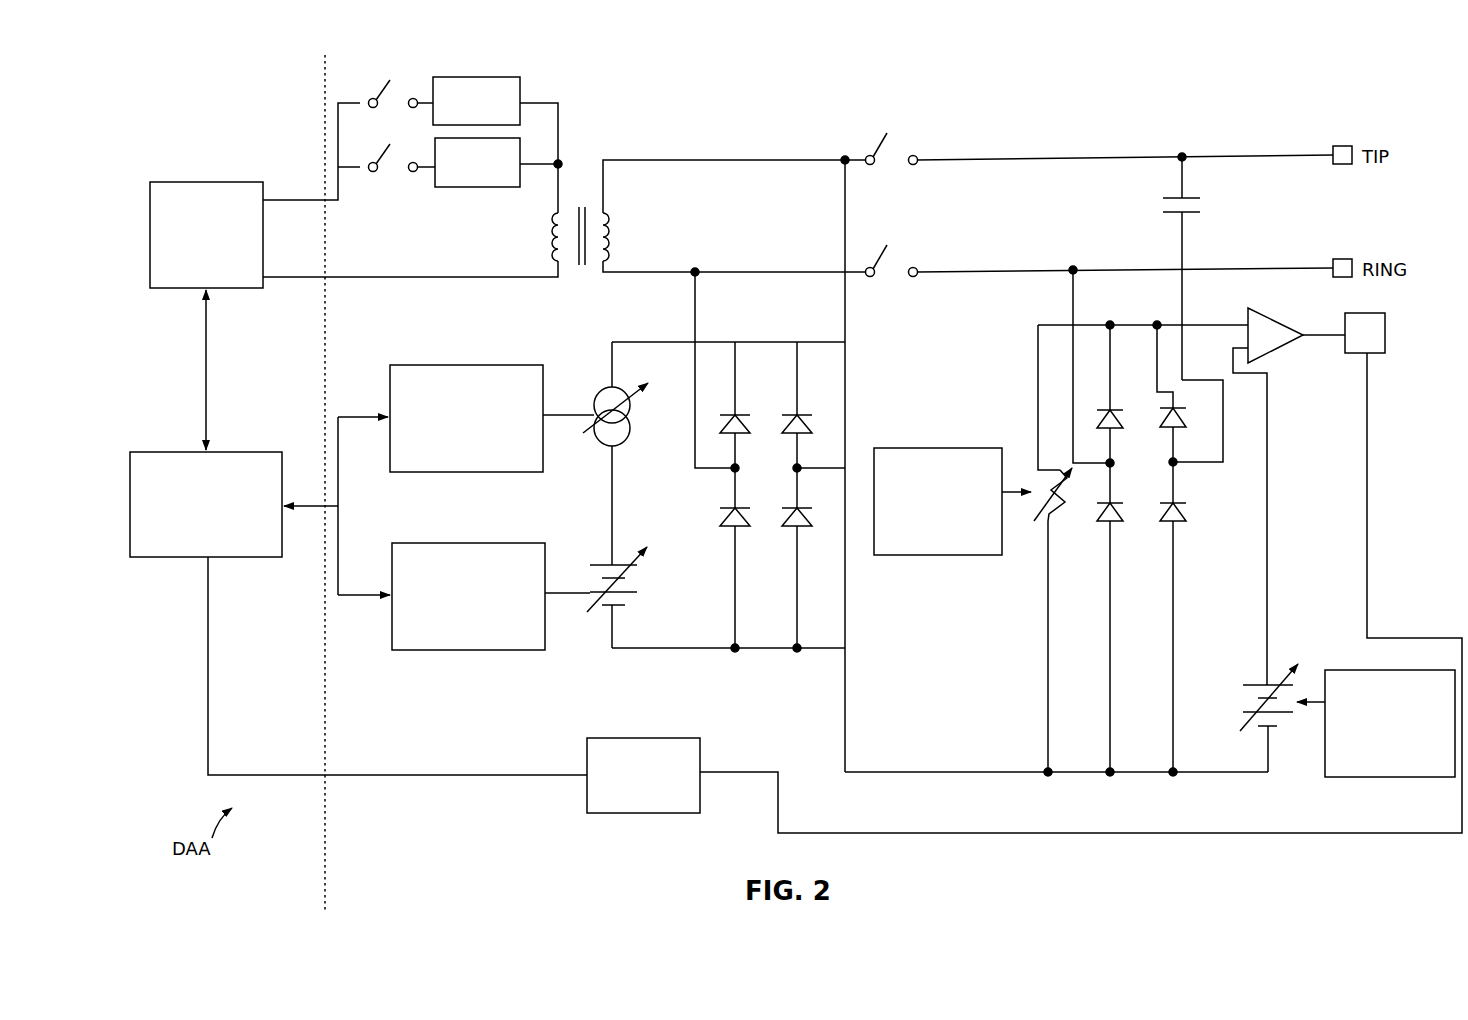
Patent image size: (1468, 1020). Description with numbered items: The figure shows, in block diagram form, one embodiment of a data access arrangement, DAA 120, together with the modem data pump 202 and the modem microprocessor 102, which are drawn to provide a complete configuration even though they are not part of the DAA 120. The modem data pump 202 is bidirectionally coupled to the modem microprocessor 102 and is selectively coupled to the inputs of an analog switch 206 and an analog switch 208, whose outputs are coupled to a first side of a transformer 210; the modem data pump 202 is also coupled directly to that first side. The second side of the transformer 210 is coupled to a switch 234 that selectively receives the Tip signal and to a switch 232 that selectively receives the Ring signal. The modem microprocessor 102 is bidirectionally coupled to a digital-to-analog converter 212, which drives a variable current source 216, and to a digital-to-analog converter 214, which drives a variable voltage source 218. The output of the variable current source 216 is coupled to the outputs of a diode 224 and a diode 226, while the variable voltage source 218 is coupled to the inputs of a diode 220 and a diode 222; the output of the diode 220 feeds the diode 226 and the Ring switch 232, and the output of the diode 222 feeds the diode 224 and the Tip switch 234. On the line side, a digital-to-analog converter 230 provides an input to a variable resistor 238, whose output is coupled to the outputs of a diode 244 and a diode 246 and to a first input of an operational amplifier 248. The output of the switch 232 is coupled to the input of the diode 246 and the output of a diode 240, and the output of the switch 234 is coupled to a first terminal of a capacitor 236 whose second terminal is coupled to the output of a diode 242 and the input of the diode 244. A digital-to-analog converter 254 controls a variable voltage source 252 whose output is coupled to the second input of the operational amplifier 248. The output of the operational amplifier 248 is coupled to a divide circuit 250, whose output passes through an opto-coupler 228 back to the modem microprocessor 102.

The modem microprocessor 102 is at (240, 557).
The data access arrangement (DAA) 120 is at (1110, 101).
The modem data pump 202 is at (238, 288).
The analog switch 206 is at (510, 77).
The analog switch 208 is at (508, 187).
The transformer 210 is at (614, 227).
The digital-to-analog converter 212 is at (533, 365).
The digital-to-analog converter 214 is at (535, 543).
The variable current source 216 is at (633, 453).
The variable voltage source 218 is at (644, 597).
The diode 220 is at (740, 530).
The diode 222 is at (802, 530).
The diode 224 is at (802, 436).
The diode 226 is at (740, 436).
The opto-coupler 228 is at (676, 813).
The digital-to-analog converter 230 is at (917, 555).
The switch 232 is at (897, 288).
The switch 234 is at (897, 176).
The capacitor 236 is at (1214, 228).
The variable resistor 238 is at (1056, 515).
The diode 240 is at (1114, 525).
The diode 242 is at (1177, 525).
The diode 244 is at (1177, 430).
The diode 246 is at (1114, 431).
The operational amplifier 248 is at (1264, 318).
The divide circuit 250 is at (1376, 355).
The variable voltage source 252 is at (1228, 702).
The digital-to-analog converter 254 is at (1340, 777).